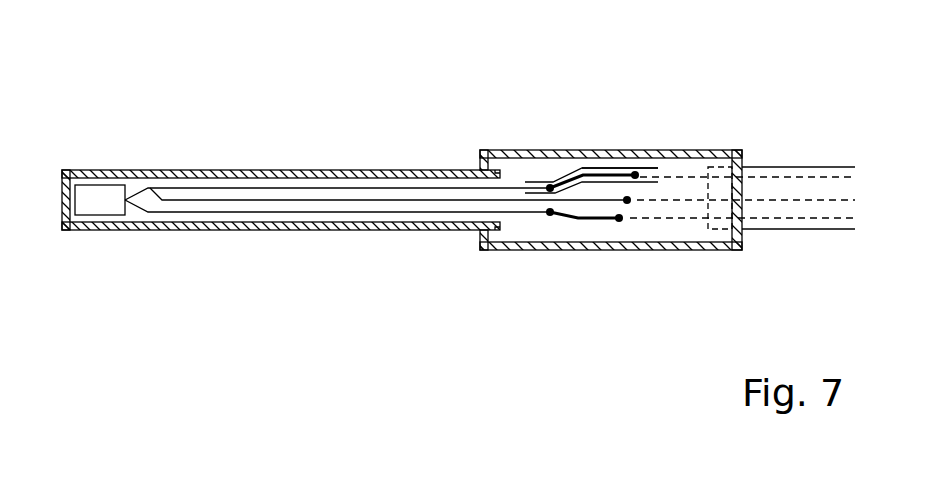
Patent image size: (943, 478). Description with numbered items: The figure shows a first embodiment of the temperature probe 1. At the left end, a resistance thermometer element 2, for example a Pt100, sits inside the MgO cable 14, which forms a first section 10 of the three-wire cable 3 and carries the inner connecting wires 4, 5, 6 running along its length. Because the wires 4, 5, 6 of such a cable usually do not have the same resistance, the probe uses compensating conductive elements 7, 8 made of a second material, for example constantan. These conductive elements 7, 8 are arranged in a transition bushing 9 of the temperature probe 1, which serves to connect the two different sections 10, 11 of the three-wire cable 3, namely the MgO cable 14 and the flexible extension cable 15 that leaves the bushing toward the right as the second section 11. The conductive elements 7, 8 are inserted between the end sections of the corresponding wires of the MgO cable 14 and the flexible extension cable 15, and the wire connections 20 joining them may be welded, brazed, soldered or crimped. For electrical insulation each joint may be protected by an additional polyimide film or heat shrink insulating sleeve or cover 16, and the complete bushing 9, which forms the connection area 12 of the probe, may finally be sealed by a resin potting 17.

The temperature probe 1 is at (267, 88).
The resistance thermometer element 2 is at (96, 198).
The three-wire cable 3 is at (347, 232).
The connecting wire 4 is at (250, 202).
The connecting wire 5 is at (213, 190).
The connecting wire 6 is at (280, 214).
The conductive element 7 is at (578, 182).
The conductive element 8 is at (570, 217).
The transition bushing 9 is at (713, 248).
The section of the three-wire cable 10 is at (405, 247).
The section of the three-wire cable 11 is at (797, 231).
The connection area 12 is at (693, 122).
The MgO cable 14 is at (193, 183).
The flexible extension cable 15 is at (845, 230).
The insulating sleeve or cover 16 is at (608, 166).
The resin potting 17 is at (613, 220).
The wire connections 20 is at (549, 213).